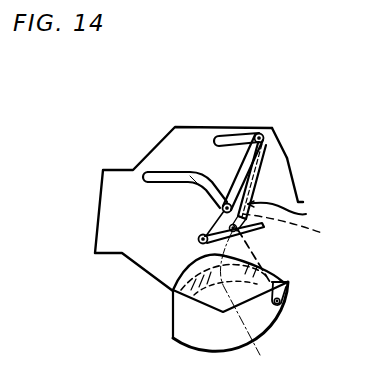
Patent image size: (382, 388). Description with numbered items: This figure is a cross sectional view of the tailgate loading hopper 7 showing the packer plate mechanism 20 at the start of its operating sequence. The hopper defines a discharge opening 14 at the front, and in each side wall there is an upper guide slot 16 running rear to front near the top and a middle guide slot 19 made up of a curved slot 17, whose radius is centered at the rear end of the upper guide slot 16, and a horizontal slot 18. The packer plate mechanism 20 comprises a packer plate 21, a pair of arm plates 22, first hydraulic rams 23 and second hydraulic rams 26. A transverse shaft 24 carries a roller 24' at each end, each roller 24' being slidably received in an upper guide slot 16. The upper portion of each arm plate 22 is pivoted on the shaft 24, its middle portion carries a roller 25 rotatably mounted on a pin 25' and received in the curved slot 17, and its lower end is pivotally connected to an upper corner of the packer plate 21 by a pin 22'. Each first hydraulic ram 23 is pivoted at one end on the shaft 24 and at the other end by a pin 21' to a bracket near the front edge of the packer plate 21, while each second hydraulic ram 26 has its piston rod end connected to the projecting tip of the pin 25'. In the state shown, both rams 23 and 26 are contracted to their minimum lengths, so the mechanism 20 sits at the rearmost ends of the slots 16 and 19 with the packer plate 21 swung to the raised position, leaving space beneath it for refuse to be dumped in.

The tailgate loading hopper 7 is at (286, 133).
The discharge opening 14 is at (108, 216).
The upper guide slot 16 is at (233, 139).
The curved slot 17 is at (221, 192).
The horizontal slot 18 is at (180, 172).
The middle guide slot 19 is at (190, 190).
The packer plate mechanism 20 is at (291, 210).
The packer plate 21 is at (260, 252).
The pin 21' is at (251, 307).
The arm plate 22 is at (183, 229).
The pin 22' is at (203, 296).
The first hydraulic ram 23 is at (262, 166).
The transverse shaft 24 is at (288, 176).
The roller 24' is at (273, 112).
The roller 25 is at (298, 232).
The pin 25' is at (207, 214).
The second hydraulic ram 26 is at (258, 257).